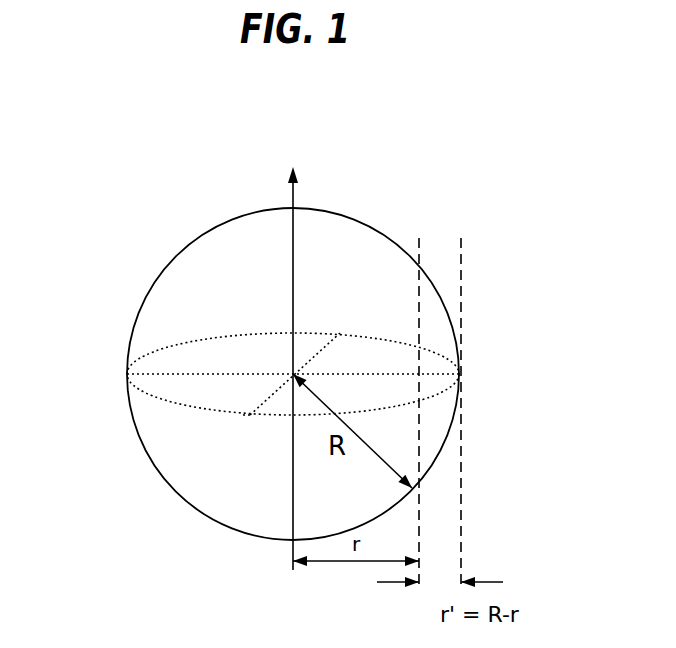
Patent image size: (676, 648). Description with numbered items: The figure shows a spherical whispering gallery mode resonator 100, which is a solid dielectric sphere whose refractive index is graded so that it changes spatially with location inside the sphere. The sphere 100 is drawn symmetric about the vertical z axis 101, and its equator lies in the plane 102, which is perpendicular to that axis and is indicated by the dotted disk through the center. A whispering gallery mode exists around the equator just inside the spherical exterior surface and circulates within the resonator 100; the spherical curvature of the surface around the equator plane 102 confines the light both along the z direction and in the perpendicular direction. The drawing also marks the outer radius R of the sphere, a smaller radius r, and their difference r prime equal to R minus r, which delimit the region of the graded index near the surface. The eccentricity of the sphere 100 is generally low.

The spherical WGM resonator 100 is at (199, 237).
The z axis 101 is at (293, 238).
The equator plane 102 is at (430, 362).